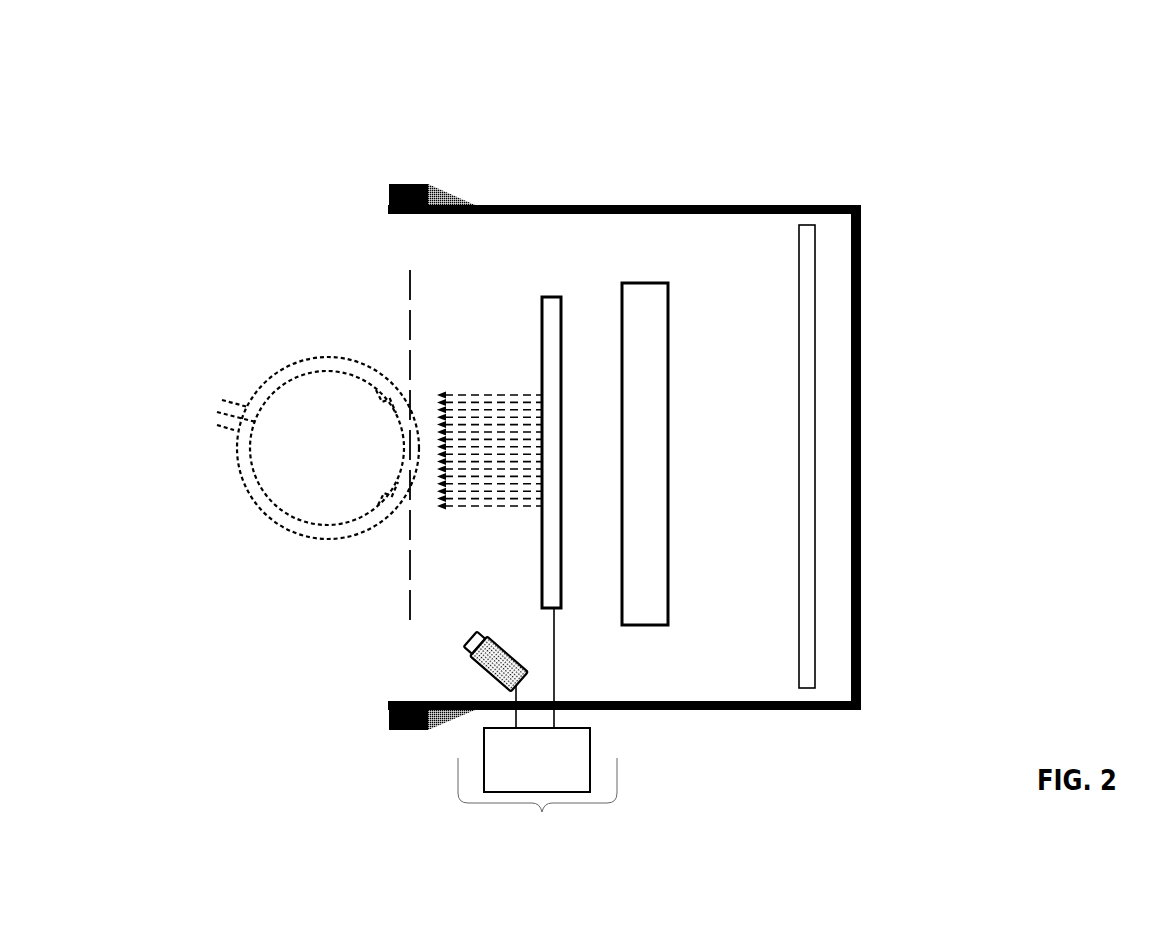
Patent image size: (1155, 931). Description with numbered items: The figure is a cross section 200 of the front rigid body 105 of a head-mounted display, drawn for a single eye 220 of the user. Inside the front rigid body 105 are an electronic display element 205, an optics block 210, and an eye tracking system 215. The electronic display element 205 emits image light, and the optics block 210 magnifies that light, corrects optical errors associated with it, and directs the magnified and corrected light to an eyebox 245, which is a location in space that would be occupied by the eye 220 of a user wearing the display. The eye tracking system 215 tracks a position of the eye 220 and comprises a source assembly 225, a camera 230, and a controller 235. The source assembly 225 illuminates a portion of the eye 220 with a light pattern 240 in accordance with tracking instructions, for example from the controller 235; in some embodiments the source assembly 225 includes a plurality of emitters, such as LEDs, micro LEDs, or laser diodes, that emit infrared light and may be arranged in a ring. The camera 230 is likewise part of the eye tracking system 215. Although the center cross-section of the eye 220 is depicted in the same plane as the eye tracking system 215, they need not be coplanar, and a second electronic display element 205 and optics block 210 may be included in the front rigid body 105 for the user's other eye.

The cross section 200 is at (590, 466).
The front rigid body 105 is at (823, 198).
The electronic display element 205 is at (815, 297).
The optics block 210 is at (645, 337).
The eye tracking system 215 is at (502, 591).
The eye 220 is at (283, 458).
The source assembly 225 is at (560, 610).
The camera 230 is at (477, 667).
The controller 235 is at (537, 760).
The light pattern 240 is at (493, 408).
The eyebox 245 is at (410, 288).